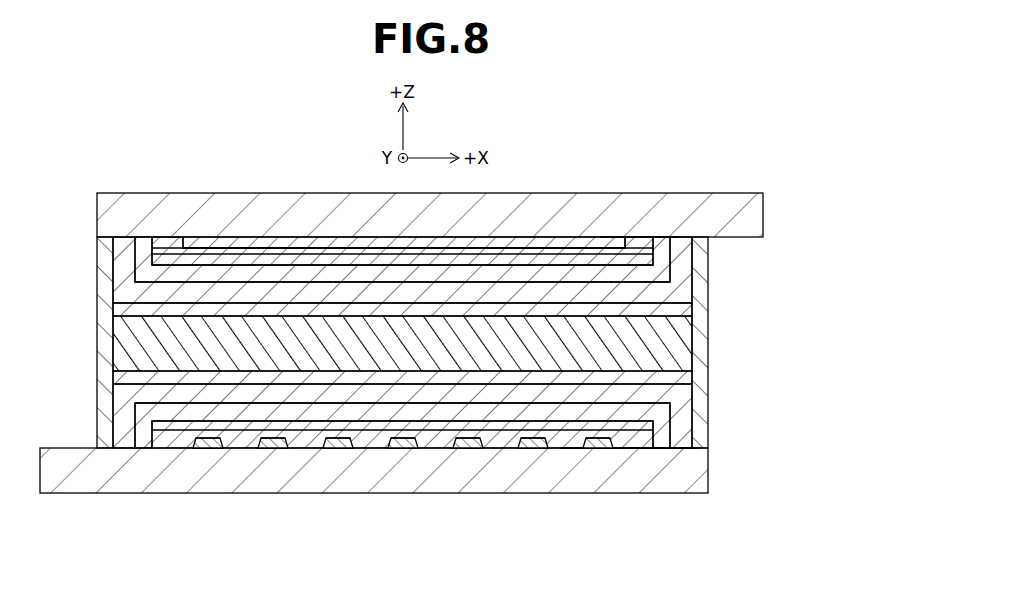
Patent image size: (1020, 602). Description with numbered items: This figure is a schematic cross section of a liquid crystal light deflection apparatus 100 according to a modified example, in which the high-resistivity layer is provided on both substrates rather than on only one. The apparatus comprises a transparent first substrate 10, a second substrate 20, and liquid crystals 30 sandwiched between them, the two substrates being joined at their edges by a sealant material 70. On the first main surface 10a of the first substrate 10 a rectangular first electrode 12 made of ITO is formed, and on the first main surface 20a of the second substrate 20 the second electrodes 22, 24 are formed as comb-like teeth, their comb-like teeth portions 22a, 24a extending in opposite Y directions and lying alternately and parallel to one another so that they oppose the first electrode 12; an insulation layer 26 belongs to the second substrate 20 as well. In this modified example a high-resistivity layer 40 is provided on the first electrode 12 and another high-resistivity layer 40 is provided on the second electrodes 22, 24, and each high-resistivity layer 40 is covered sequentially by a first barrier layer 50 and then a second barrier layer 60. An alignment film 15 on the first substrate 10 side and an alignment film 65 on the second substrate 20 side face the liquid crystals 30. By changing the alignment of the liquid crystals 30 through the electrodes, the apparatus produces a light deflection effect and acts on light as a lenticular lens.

The liquid crystal light deflection apparatus 100 is at (176, 157).
The first substrate 10 is at (764, 214).
The first main surface 10a is at (644, 246).
The first electrode 12 is at (180, 240).
The alignment film 15 is at (690, 311).
The second substrate 20 is at (710, 468).
The first main surface 20a is at (636, 444).
The second electrode 22 is at (220, 440).
The comb-like teeth portion 22a is at (433, 510).
The second electrode 24 is at (285, 440).
The comb-like teeth portion 24a is at (433, 510).
The insulation layer 26 is at (664, 250).
The liquid crystals 30 is at (690, 346).
The high-resistivity layer 40 is at (150, 258).
The first barrier layer 50 is at (128, 418).
The second barrier layer 60 is at (124, 296).
The alignment film 65 is at (118, 380).
The sealant material 70 is at (100, 330).